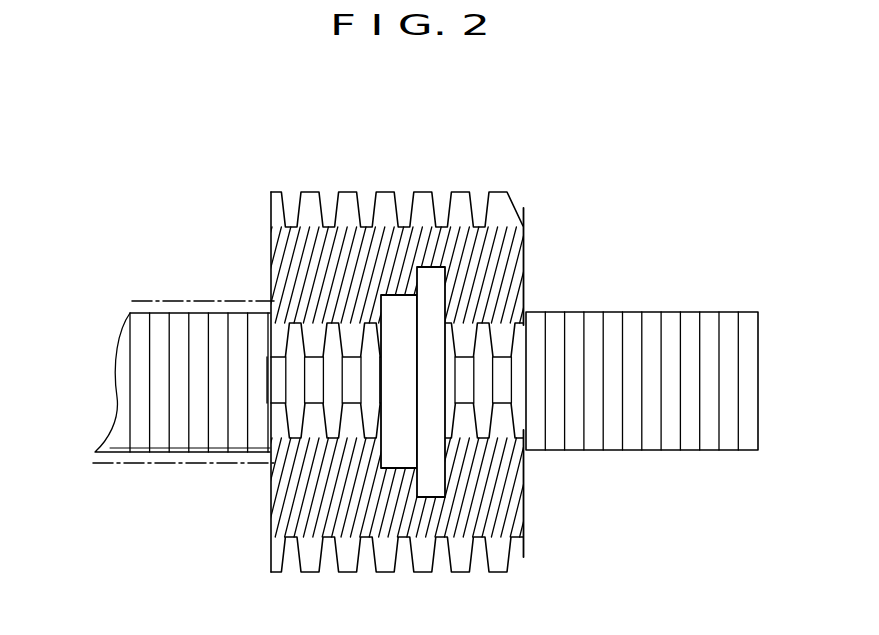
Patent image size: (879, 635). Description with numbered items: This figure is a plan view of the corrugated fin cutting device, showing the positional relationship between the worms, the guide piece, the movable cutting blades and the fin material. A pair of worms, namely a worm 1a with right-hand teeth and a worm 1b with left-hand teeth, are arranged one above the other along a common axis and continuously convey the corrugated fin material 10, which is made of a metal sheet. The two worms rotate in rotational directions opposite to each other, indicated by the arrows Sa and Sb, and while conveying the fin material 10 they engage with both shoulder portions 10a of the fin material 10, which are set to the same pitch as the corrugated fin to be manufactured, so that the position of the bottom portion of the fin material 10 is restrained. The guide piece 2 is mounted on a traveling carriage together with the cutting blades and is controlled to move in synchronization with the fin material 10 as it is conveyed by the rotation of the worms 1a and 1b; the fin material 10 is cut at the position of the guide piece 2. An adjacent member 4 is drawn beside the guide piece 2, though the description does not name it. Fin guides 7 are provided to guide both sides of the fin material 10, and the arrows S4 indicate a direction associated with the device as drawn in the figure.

The worm with right-hand teeth 1a is at (527, 265).
The worm with left-hand teeth 1b is at (530, 495).
The guide piece 2 is at (395, 307).
The flange member 4 is at (430, 278).
The fin guide 7 is at (172, 297).
The corrugated fin material 10 is at (163, 413).
The shoulder portion 10a is at (633, 330).
The direction S4 is at (107, 380).
The rotational direction of worm Sa is at (230, 281).
The rotational direction of worm Sb is at (223, 478).